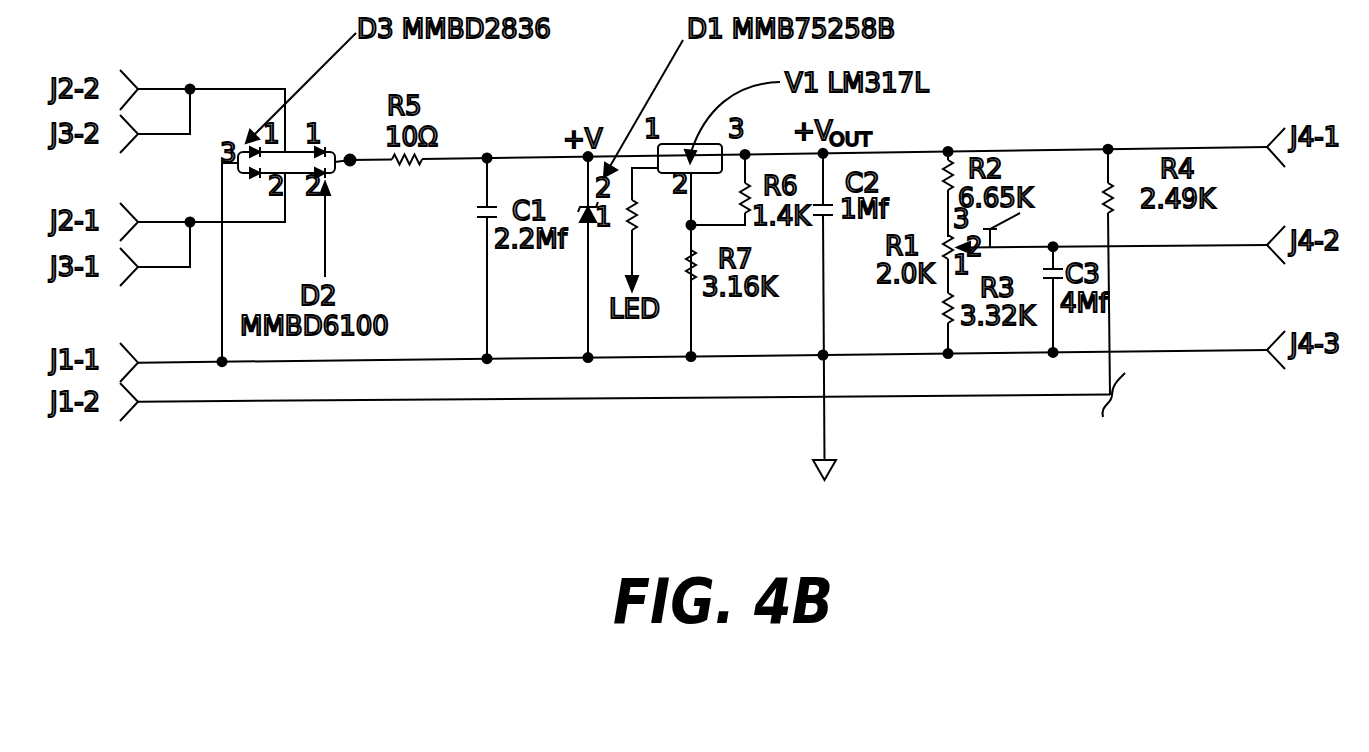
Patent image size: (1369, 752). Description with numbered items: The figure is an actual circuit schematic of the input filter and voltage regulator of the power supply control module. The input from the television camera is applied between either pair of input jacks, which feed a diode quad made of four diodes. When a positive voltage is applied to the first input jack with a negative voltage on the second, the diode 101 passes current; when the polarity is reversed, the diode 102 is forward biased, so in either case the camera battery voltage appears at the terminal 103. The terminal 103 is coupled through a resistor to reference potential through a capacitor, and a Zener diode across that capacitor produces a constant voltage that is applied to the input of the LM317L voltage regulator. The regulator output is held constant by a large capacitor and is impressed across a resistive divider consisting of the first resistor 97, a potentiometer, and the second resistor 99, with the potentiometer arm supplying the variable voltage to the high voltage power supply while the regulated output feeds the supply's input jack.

The first resistor 97 is at (949, 157).
The second resistor 99 is at (946, 318).
The diode 101 is at (330, 145).
The diode 102 is at (330, 180).
The terminal 103 is at (351, 156).